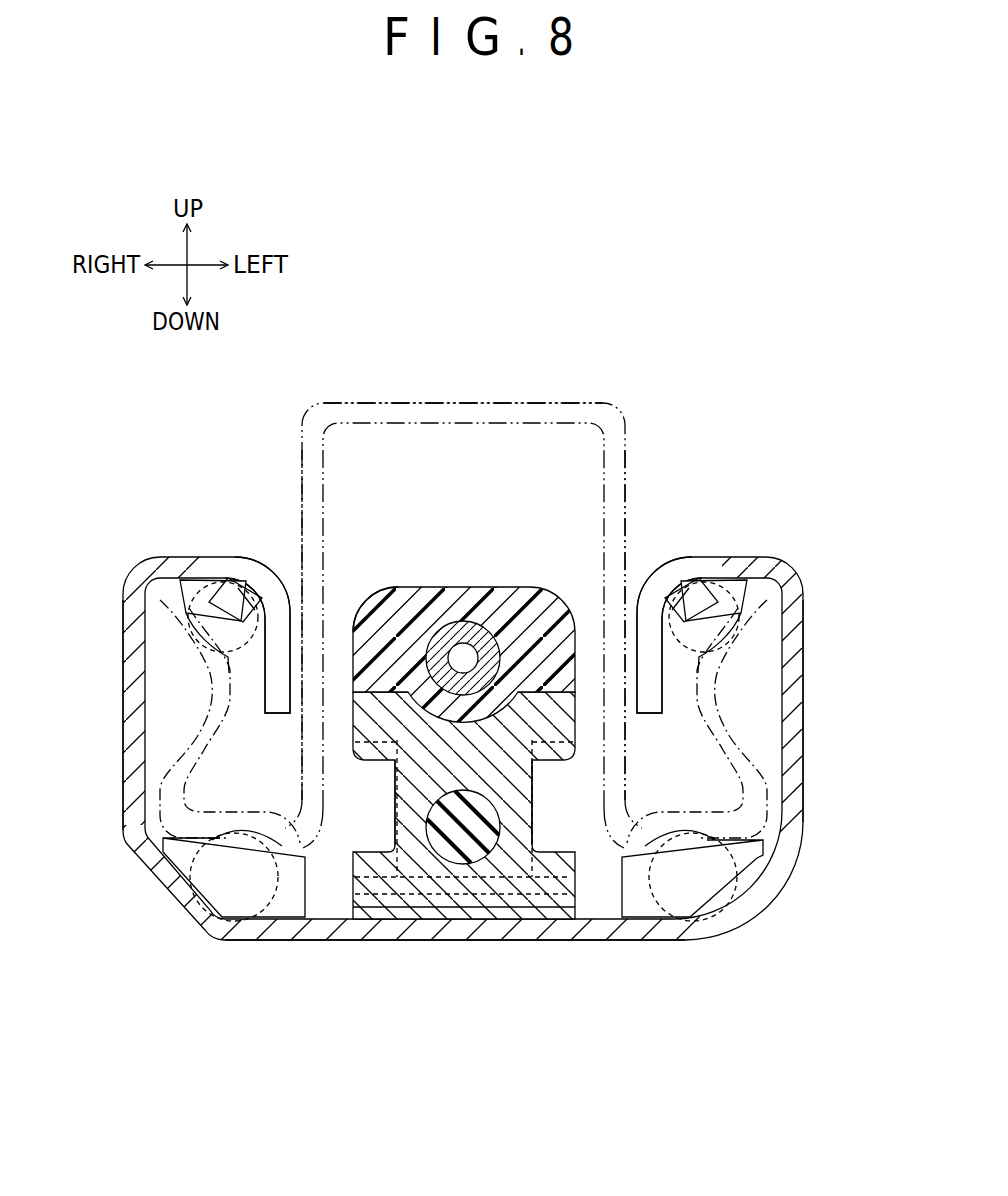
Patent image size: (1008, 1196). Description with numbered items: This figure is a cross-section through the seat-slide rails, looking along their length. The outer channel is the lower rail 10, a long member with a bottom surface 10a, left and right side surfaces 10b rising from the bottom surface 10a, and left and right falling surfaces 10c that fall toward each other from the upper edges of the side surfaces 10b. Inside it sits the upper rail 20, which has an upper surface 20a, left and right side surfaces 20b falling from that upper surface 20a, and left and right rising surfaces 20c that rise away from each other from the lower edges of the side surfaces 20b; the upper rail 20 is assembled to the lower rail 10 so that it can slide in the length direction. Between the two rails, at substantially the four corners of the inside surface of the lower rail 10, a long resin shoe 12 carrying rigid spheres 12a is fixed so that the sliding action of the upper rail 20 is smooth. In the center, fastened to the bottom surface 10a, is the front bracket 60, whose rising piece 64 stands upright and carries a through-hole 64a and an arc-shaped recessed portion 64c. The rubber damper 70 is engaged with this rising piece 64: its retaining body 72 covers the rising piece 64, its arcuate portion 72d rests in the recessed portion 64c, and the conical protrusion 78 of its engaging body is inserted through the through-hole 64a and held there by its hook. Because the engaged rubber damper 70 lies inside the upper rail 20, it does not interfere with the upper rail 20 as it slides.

The lower rail 10 is at (799, 537).
The bottom surface 10a is at (385, 940).
The side surfaces 10b is at (803, 760).
The falling surfaces 10c is at (652, 650).
The resin shoe 12 is at (634, 900).
The rigid spheres 12a is at (690, 875).
The upper rail 20 is at (613, 351).
The upper surface 20a is at (478, 403).
The side surfaces 20b is at (605, 512).
The rising surfaces 20c is at (735, 735).
The front bracket 60 is at (473, 805).
The rising piece 64 is at (525, 797).
The through-hole 64a is at (500, 640).
The recessed portion 64c is at (480, 745).
The rubber damper 70 is at (464, 591).
The retaining body 72 is at (468, 592).
The arcuate portion 72d is at (405, 650).
The protrusion 78 is at (477, 837).